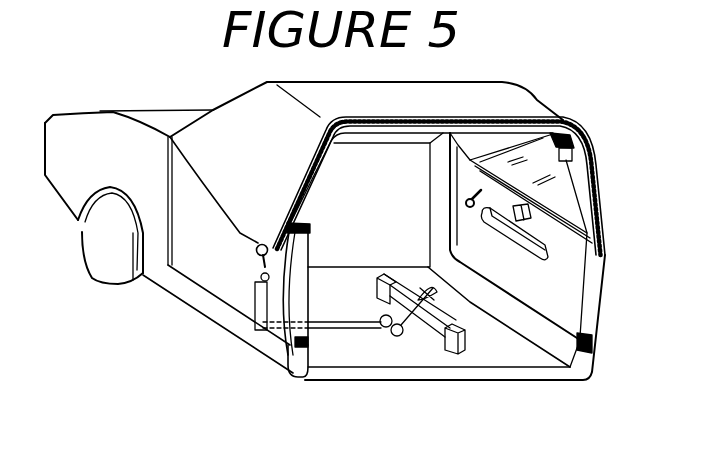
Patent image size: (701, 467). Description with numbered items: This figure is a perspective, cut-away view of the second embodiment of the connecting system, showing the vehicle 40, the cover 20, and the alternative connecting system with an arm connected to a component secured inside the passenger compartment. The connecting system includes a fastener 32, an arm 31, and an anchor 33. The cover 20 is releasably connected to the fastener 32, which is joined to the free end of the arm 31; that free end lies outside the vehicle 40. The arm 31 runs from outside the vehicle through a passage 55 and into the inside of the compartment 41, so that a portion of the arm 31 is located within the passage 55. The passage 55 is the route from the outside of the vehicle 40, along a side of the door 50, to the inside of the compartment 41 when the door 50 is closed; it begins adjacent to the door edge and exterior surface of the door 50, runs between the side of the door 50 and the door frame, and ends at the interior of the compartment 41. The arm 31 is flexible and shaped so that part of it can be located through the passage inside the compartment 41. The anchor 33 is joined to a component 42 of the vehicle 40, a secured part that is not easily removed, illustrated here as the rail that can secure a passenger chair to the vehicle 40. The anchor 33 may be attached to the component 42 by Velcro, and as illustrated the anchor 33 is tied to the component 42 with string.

The cover 20 is at (250, 128).
The vehicle 40 is at (106, 159).
The compartment 41 is at (392, 200).
The passage 55 is at (170, 198).
The door 50 is at (217, 258).
The fastener 32 is at (259, 268).
The arm 31 is at (262, 302).
The anchor 33 is at (393, 338).
The component 42 is at (423, 305).